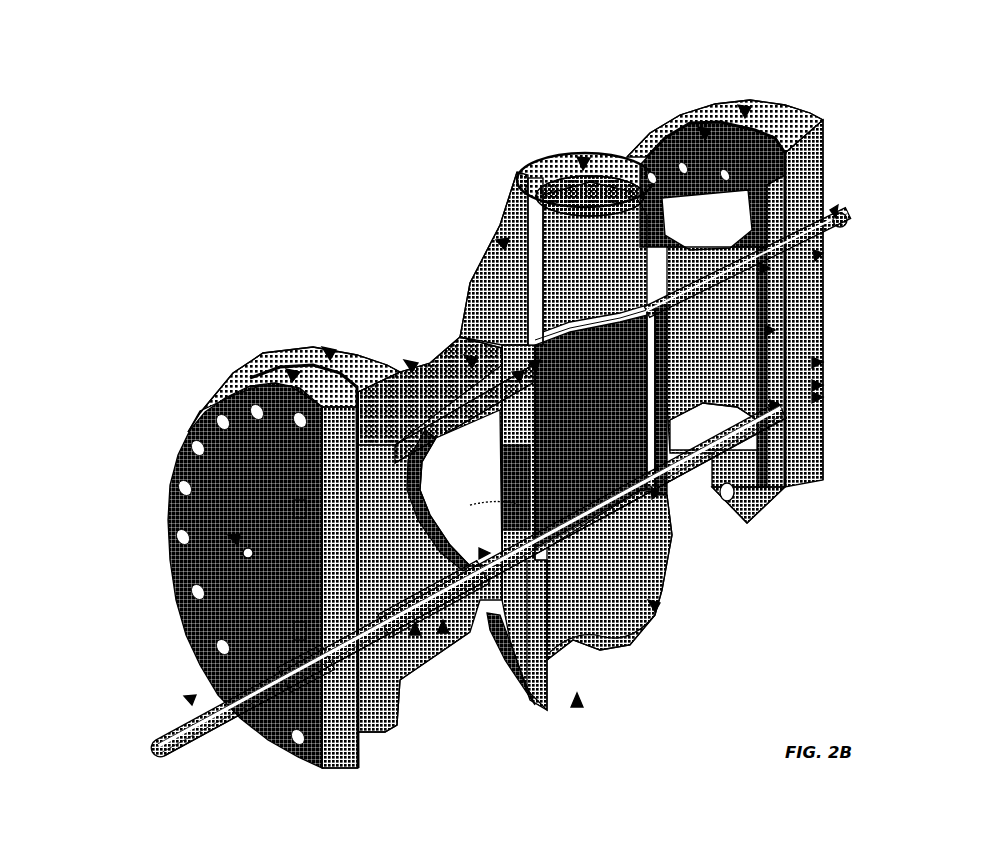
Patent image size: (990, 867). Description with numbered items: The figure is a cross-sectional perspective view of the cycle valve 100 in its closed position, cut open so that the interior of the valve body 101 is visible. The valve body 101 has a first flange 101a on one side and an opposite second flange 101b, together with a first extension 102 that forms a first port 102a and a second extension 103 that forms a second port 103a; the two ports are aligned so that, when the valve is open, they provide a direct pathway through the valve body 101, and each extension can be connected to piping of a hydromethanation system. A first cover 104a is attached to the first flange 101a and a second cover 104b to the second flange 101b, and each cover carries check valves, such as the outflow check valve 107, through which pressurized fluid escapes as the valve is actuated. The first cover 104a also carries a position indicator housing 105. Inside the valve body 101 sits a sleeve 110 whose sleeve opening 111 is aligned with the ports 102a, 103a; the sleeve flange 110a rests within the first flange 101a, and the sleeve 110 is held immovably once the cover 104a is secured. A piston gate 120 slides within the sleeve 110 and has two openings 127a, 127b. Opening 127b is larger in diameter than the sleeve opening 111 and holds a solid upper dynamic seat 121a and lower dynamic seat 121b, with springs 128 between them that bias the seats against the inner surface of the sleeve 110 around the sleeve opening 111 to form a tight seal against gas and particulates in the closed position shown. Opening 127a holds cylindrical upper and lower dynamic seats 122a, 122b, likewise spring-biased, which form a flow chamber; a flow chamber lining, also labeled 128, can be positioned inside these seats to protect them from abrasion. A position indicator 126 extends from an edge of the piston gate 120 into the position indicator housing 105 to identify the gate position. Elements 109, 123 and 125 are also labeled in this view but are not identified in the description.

The cycle valve 100 is at (299, 182).
The valve body 101 is at (410, 370).
The first flange 101a is at (328, 356).
The second flange 101b is at (703, 136).
The first extension 102 is at (500, 246).
The first port 102a is at (582, 165).
The second extension 103 is at (660, 615).
The second port 103a is at (577, 708).
The first cover 104a is at (290, 378).
The second cover 104b is at (743, 114).
The position indicator housing 105 is at (190, 703).
The outflow check valve 107 is at (175, 462).
The guide rod 109 is at (838, 205).
The sleeve 110 is at (443, 634).
The flange 110a is at (257, 375).
The sleeve opening 111 is at (695, 540).
The piston gate 120 is at (480, 553).
The upper dynamic seat 121a is at (500, 310).
The lower dynamic seat 121b is at (607, 657).
The upper dynamic seat 122a is at (823, 253).
The lower dynamic seat 122b is at (823, 385).
The valve seat 123 is at (823, 290).
The body surface 125 is at (480, 362).
The position indicator 126 is at (418, 665).
The opening 127a is at (823, 397).
The opening 127b is at (493, 506).
The springs 128 is at (823, 313).